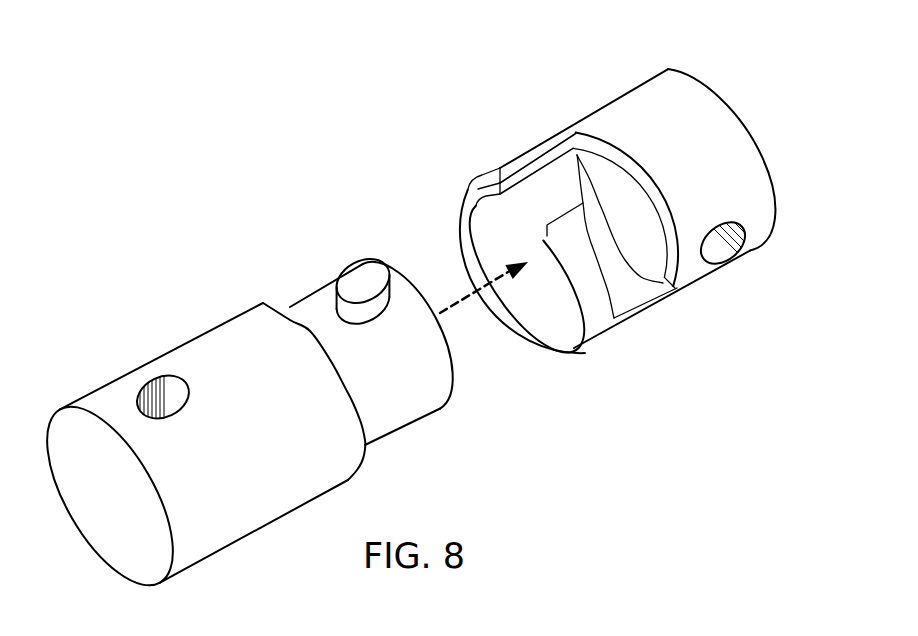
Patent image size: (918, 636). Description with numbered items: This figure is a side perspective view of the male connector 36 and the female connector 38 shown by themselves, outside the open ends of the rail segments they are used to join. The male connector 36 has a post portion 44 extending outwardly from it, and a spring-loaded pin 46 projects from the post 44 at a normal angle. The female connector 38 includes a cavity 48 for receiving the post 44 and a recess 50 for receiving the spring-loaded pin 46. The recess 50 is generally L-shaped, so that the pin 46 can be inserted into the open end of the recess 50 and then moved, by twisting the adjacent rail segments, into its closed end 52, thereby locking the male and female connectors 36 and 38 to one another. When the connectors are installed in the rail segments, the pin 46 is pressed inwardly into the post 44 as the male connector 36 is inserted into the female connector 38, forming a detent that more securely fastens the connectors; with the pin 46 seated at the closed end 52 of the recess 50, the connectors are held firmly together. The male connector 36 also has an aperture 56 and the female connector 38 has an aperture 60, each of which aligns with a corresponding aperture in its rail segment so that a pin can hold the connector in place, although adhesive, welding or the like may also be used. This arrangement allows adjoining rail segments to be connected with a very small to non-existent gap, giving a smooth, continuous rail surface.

The male connector 36 is at (149, 321).
The female connector 38 is at (580, 82).
The post portion 44 is at (400, 415).
The spring-loaded pin 46 is at (352, 273).
The cavity 48 is at (502, 236).
The recess 50 is at (540, 197).
The closed end 52 is at (650, 258).
The aperture 56 is at (152, 387).
The aperture 60 is at (725, 258).